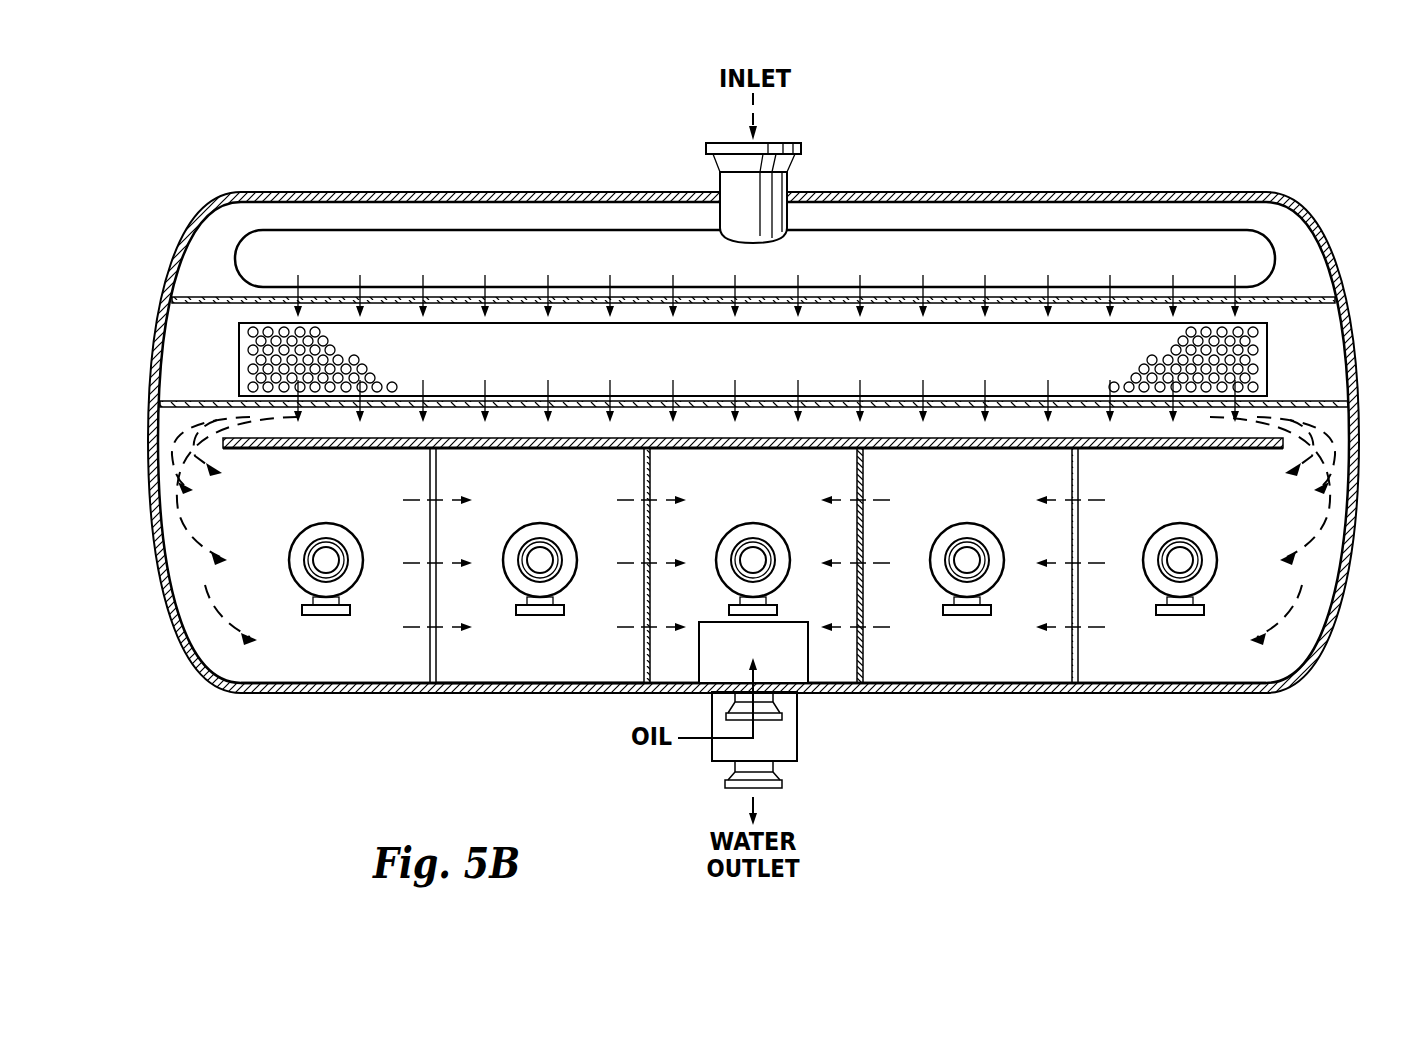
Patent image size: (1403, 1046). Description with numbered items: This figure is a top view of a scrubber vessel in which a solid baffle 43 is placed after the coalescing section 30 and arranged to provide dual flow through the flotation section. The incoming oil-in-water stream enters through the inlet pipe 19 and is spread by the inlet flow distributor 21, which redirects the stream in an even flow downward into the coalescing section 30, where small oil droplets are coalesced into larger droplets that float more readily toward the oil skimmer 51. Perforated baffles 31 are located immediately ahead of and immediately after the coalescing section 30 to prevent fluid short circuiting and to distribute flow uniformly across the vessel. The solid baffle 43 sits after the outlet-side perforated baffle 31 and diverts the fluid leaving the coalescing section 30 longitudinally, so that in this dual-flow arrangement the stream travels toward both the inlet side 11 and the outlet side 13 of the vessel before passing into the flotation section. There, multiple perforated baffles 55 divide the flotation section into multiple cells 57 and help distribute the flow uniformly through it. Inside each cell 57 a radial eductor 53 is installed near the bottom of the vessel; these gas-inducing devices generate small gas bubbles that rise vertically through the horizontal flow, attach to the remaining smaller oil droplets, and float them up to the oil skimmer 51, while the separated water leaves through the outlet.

The inlet side 11 is at (910, 190).
The outlet side 13 is at (993, 687).
The inlet pipe 19 is at (718, 151).
The inlet flow distributor 21 is at (430, 247).
The coalescing section 30 is at (238, 348).
The perforated baffles 31 is at (217, 297).
The solid baffle 43 is at (295, 450).
The oil skimmer 51 is at (808, 643).
The radial eductors 53 is at (313, 570).
The perforated baffles 55 is at (858, 478).
The cells 57 is at (537, 647).